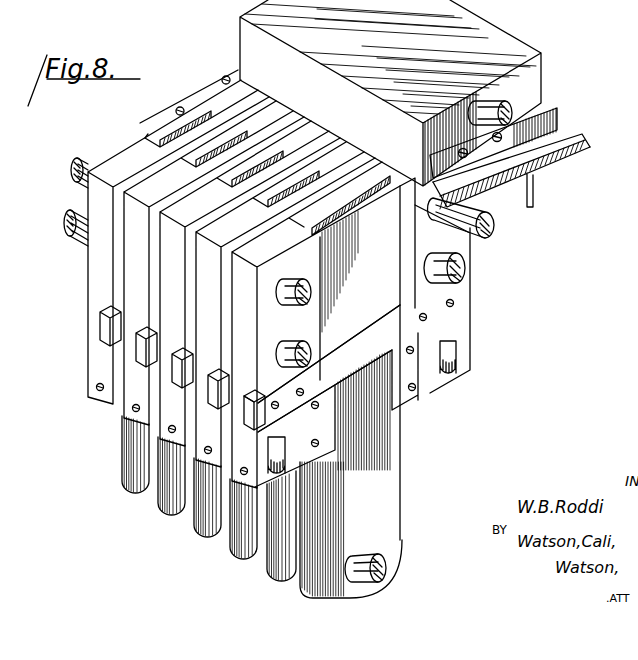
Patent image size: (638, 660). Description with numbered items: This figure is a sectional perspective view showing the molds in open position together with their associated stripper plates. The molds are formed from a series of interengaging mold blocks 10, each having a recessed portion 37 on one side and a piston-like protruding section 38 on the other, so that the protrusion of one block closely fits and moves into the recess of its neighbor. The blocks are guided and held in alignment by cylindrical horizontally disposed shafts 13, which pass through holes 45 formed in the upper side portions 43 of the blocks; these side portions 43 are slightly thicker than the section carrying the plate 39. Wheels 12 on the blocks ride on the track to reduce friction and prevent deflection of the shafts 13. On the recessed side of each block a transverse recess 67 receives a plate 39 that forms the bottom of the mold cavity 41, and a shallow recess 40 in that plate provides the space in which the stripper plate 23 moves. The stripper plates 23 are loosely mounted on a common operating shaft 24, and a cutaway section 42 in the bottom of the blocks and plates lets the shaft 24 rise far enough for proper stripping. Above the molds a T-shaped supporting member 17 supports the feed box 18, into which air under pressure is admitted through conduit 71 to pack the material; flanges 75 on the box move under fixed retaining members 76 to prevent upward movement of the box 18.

The mold block 10 is at (165, 255).
The wheels 12 is at (448, 373).
The cylindrical horizontally disposed shafts 13 is at (65, 215).
The T-shaped supporting member 17 is at (557, 168).
The feed box 18 is at (536, 72).
The stripper plate 23 is at (395, 500).
The common operating shaft 24 is at (365, 560).
The recessed portion 37 is at (178, 100).
The protruding section 38 is at (155, 132).
The plate 39 is at (452, 312).
The indented portion or shallow recess 40 is at (354, 330).
The mold cavity 41 is at (221, 112).
The cutaway section 42 is at (410, 380).
The upper side portions 43 is at (420, 256).
The holes 45 is at (312, 258).
The transverse recess 67 is at (240, 421).
The conduit 71 is at (502, 105).
The flanges 75 is at (542, 128).
The fixed holddown or retaining members 76 is at (566, 140).